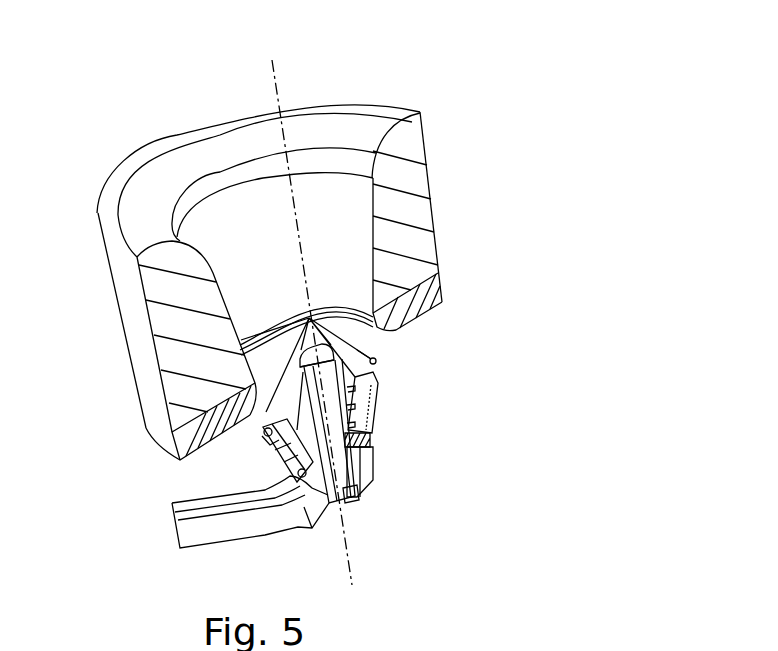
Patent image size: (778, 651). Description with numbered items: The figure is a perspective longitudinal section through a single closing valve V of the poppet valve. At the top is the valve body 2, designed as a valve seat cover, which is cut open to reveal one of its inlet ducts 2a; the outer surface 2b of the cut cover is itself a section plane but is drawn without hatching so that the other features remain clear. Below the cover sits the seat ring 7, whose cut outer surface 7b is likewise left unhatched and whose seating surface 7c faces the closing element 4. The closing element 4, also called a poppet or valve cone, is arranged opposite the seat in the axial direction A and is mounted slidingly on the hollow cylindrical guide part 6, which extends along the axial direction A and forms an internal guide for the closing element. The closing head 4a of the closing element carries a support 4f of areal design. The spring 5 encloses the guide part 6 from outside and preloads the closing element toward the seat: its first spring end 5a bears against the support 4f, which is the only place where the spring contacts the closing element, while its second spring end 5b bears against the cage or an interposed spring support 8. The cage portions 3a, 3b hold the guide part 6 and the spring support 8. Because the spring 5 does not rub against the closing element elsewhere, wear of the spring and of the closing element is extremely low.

The valve body 2 is at (406, 188).
The inlet duct 2a is at (342, 281).
The outer surface 2b is at (120, 278).
The holder block 3a is at (373, 472).
The holder arm 3b is at (375, 418).
The closing element 4 is at (387, 362).
The closing head 4a is at (373, 361).
The support 4f is at (380, 357).
The spring 5 is at (266, 440).
The first spring end 5a is at (258, 444).
The second spring end 5b is at (372, 440).
The guide part 6 is at (353, 497).
The seat ring 7 is at (418, 303).
The outer surface 7b is at (150, 437).
The seat surface 7c is at (386, 335).
The spring support 8 is at (312, 527).
The axial direction A is at (277, 87).
The closing valve V is at (409, 56).